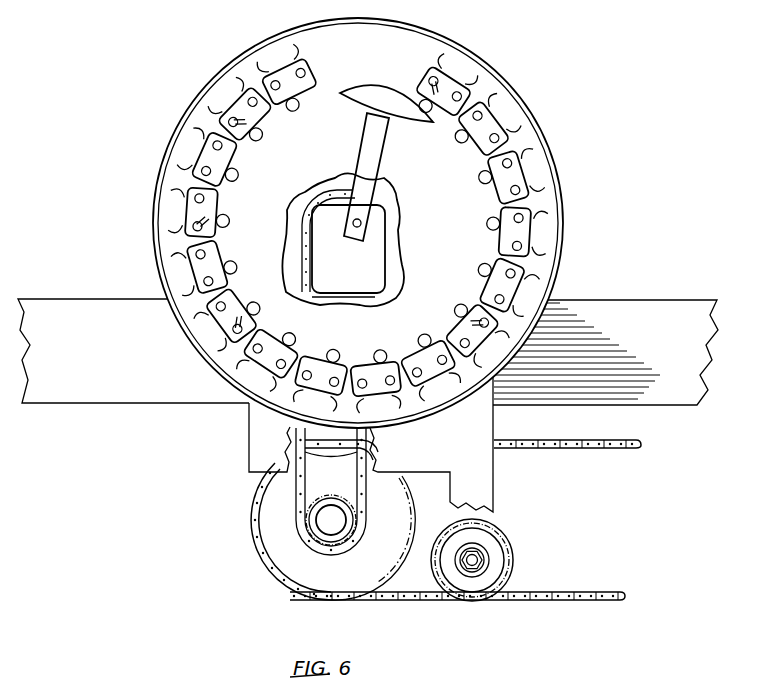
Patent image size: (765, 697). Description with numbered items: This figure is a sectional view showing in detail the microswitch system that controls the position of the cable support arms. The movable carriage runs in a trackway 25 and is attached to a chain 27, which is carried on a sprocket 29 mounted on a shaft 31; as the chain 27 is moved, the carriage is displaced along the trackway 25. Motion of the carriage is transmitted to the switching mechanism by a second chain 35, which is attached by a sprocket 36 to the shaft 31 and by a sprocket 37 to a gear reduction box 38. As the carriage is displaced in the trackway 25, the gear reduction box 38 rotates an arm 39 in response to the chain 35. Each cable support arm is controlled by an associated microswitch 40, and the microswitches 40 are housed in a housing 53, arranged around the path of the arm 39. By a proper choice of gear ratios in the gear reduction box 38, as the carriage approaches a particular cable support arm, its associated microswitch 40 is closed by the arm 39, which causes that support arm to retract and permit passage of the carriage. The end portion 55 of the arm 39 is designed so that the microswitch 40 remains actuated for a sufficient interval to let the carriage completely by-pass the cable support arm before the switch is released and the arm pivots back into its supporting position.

The trackway 25 is at (623, 302).
The chain 27 is at (545, 600).
The sprocket 29 is at (312, 585).
The shaft 31 is at (316, 527).
The chain 35 is at (366, 492).
The sprocket 36 is at (345, 497).
The sprocket 37 is at (332, 198).
The gear reduction box 38 is at (381, 233).
The arm 39 is at (383, 150).
The microswitch 40 is at (294, 73).
The housing 53 is at (526, 118).
The end portion 55 is at (380, 92).